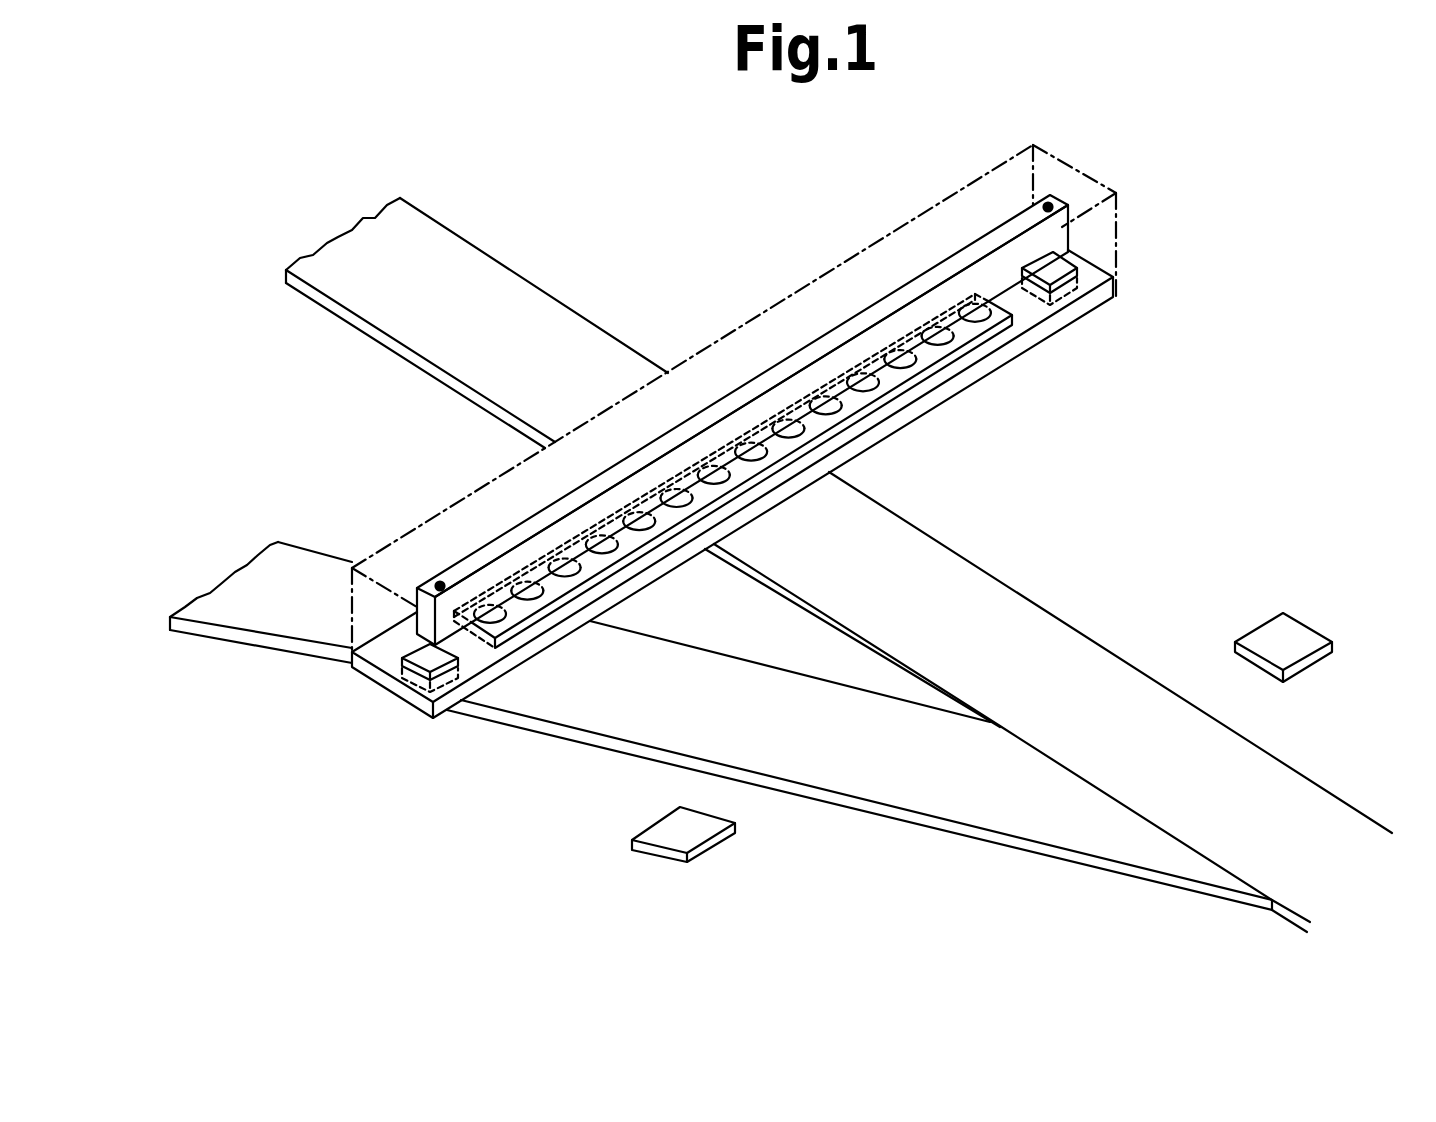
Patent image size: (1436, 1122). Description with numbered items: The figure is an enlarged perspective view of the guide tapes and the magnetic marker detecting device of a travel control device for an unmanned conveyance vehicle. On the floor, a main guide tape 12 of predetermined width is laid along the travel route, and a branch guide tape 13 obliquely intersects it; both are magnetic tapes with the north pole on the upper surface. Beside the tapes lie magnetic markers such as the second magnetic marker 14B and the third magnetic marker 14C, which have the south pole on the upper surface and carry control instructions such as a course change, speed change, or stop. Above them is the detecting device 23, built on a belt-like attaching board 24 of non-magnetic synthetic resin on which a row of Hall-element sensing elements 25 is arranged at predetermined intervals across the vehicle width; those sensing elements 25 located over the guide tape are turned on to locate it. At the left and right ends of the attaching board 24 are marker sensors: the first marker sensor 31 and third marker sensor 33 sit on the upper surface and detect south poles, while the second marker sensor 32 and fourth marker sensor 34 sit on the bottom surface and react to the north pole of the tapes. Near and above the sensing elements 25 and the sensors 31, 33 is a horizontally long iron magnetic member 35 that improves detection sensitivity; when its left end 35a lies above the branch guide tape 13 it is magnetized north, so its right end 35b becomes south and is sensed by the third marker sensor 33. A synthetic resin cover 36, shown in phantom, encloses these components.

The main guide tape 12 is at (483, 253).
The branch guide tape 13 is at (663, 728).
The second magnetic marker 14B is at (677, 838).
The third magnetic marker 14C is at (1293, 635).
The detecting device 23 is at (753, 314).
The attaching board 24 is at (1072, 313).
The sensing elements 25 is at (906, 369).
The first marker sensor 31 is at (405, 651).
The second marker sensor 32 is at (412, 705).
The third marker sensor 33 is at (1066, 262).
The fourth marker sensor 34 is at (1102, 297).
The magnetic member 35 is at (933, 268).
The left end of magnetic member 35a is at (438, 582).
The right end of magnetic member 35b is at (1093, 188).
The synthetic resin cover 36 is at (1075, 163).